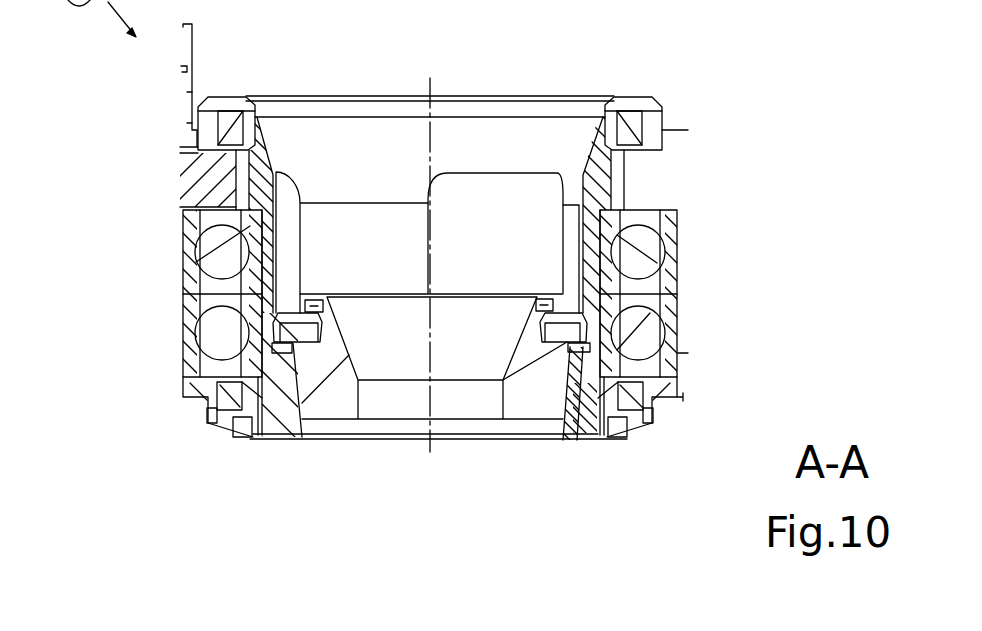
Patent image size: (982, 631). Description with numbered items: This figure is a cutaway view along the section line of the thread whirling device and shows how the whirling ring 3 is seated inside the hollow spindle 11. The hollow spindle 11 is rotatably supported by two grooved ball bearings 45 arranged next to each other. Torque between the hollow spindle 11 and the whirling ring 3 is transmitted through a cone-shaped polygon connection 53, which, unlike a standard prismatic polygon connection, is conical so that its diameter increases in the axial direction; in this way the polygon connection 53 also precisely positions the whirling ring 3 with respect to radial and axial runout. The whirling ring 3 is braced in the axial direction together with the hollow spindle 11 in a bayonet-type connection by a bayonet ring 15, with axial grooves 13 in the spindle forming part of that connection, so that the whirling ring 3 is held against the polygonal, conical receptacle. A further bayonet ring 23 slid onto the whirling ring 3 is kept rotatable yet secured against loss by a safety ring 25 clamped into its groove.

The whirling ring 3 is at (330, 405).
The hollow spindle 11 is at (280, 427).
The axial grooves 13 is at (560, 231).
The bayonet ring 15 is at (578, 350).
The bayonet ring 23 is at (549, 345).
The safety ring 25 is at (549, 305).
The grooved ball bearings 45 is at (250, 349).
The cone-shaped polygon connection 53 is at (280, 363).